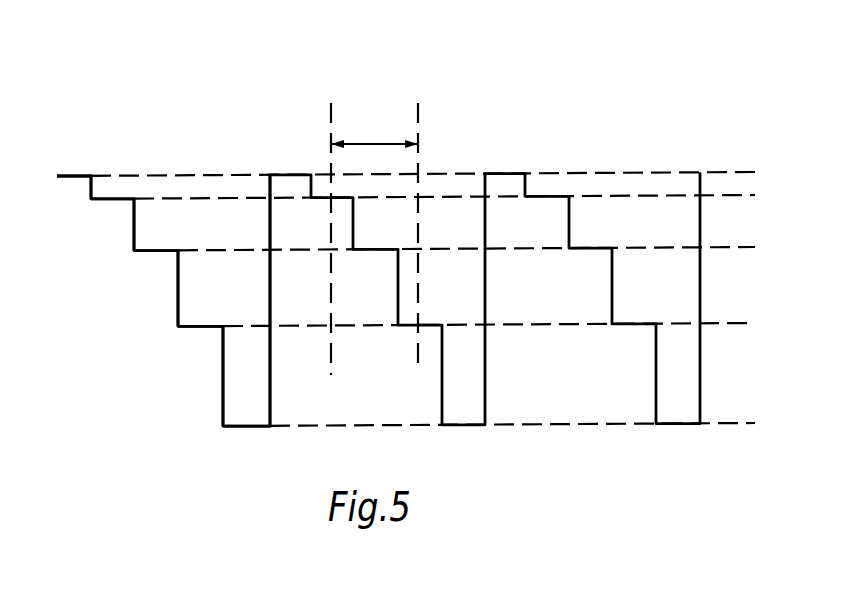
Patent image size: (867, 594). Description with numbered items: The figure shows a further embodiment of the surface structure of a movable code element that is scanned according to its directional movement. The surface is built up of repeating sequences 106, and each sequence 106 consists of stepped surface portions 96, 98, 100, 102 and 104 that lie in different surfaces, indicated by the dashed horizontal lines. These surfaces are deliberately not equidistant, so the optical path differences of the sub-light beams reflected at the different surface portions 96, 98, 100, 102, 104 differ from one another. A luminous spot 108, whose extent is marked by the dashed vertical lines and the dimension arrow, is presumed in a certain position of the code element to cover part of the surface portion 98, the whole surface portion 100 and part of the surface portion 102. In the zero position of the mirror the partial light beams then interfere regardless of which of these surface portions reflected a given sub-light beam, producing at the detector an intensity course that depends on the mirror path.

The surface portion 96 is at (73, 176).
The surface portion 98 is at (121, 199).
The surface portion 100 is at (157, 250).
The surface portion 102 is at (202, 327).
The surface portion 104 is at (245, 427).
The sequence 106 is at (208, 113).
The luminous spot 108 is at (372, 144).